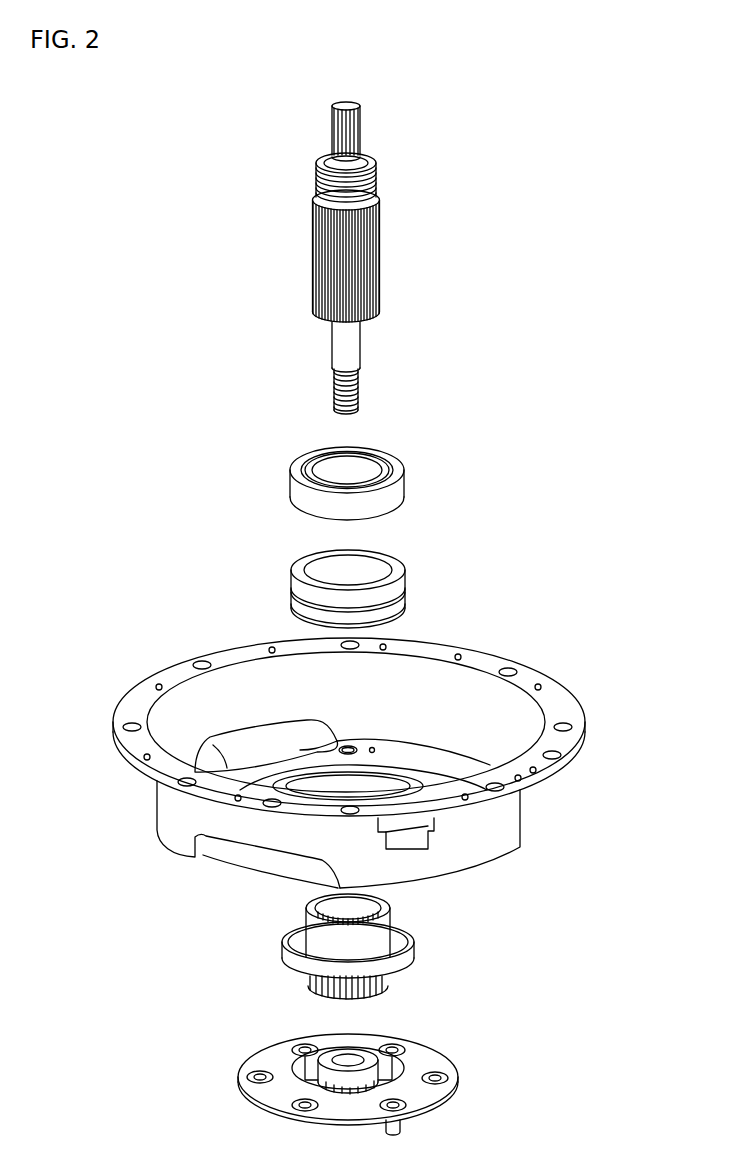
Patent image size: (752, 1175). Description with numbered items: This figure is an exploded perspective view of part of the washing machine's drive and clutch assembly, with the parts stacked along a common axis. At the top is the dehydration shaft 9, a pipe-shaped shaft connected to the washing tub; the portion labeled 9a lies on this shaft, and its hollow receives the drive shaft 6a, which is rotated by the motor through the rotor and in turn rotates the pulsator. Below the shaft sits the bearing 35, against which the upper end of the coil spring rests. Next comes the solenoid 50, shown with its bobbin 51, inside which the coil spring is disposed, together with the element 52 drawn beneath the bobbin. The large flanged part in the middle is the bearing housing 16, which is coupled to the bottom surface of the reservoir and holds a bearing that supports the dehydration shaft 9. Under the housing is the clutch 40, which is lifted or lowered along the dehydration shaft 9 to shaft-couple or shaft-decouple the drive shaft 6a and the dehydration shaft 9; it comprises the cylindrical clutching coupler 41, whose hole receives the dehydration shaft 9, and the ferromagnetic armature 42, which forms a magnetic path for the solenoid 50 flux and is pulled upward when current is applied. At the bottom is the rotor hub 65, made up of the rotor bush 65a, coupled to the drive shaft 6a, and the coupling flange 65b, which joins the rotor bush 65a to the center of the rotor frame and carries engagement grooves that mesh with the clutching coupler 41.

The dehydration shaft 9 is at (336, 258).
The serration portion of shaft 9a is at (330, 282).
The drive shaft 6a is at (352, 352).
The bearing 35 is at (392, 497).
The solenoid 50 is at (442, 583).
The bobbin 51 is at (393, 580).
The second seal member 52 is at (397, 600).
The bearing housing 16 is at (503, 820).
The clutch 40 is at (426, 950).
The clutching coupler 41 is at (380, 942).
The armature 42 is at (387, 966).
The rotor hub 65 is at (438, 1086).
The rotor bush 65a is at (452, 1067).
The coupling flange 65b is at (448, 1092).